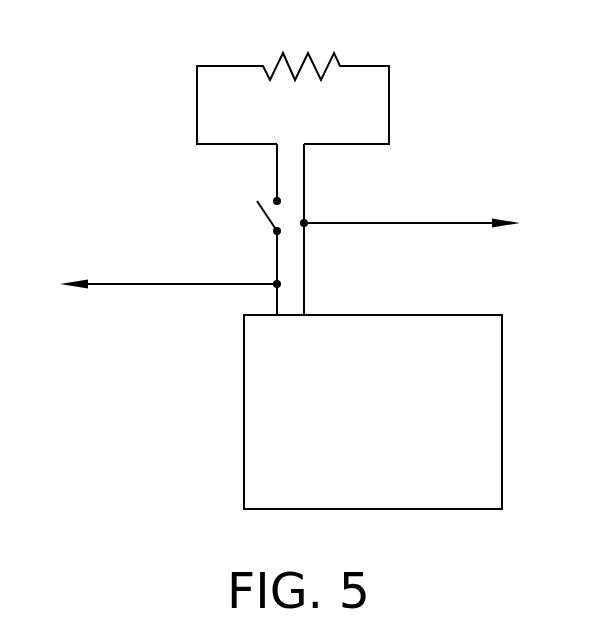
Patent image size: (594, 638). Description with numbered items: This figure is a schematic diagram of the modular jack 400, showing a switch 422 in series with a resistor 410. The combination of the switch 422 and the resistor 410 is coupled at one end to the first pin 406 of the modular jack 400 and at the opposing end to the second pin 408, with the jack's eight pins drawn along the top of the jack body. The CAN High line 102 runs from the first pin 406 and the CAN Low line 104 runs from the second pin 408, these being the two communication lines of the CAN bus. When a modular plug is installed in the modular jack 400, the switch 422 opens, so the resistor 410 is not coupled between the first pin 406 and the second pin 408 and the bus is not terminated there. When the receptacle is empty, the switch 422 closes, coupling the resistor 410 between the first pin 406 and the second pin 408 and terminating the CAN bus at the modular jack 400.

The resistor 410 is at (334, 54).
The switch 422 is at (263, 213).
The Pin 1 406 is at (276, 260).
The Pin 2 408 is at (306, 251).
The CAN High line 102 is at (120, 283).
The CAN Low line 104 is at (465, 223).
The modular jack 400 is at (503, 376).